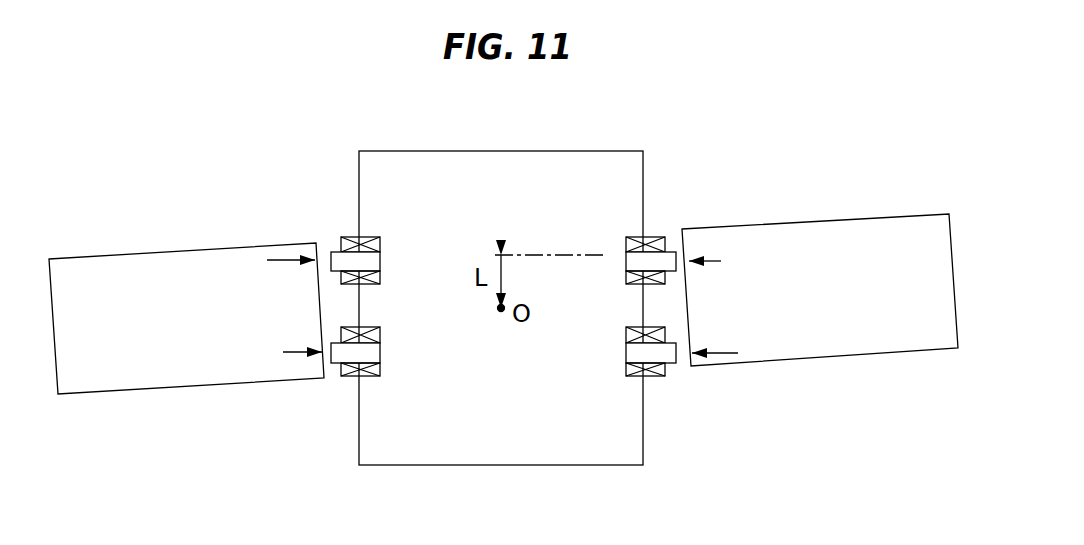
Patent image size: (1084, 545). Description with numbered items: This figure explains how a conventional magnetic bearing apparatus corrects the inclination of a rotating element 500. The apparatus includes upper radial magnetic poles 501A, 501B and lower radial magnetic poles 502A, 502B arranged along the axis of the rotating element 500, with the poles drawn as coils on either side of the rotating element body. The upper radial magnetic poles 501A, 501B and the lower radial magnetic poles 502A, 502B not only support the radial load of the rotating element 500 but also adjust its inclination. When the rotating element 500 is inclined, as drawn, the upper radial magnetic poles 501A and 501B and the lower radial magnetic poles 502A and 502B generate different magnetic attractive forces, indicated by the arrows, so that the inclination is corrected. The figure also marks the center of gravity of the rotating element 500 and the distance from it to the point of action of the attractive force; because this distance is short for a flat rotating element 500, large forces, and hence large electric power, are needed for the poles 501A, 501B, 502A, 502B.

The rotating element 500 is at (188, 250).
The upper radial magnetic pole 501A is at (353, 237).
The upper radial magnetic pole 501B is at (652, 235).
The lower radial magnetic pole 502A is at (355, 377).
The lower radial magnetic pole 502B is at (650, 377).